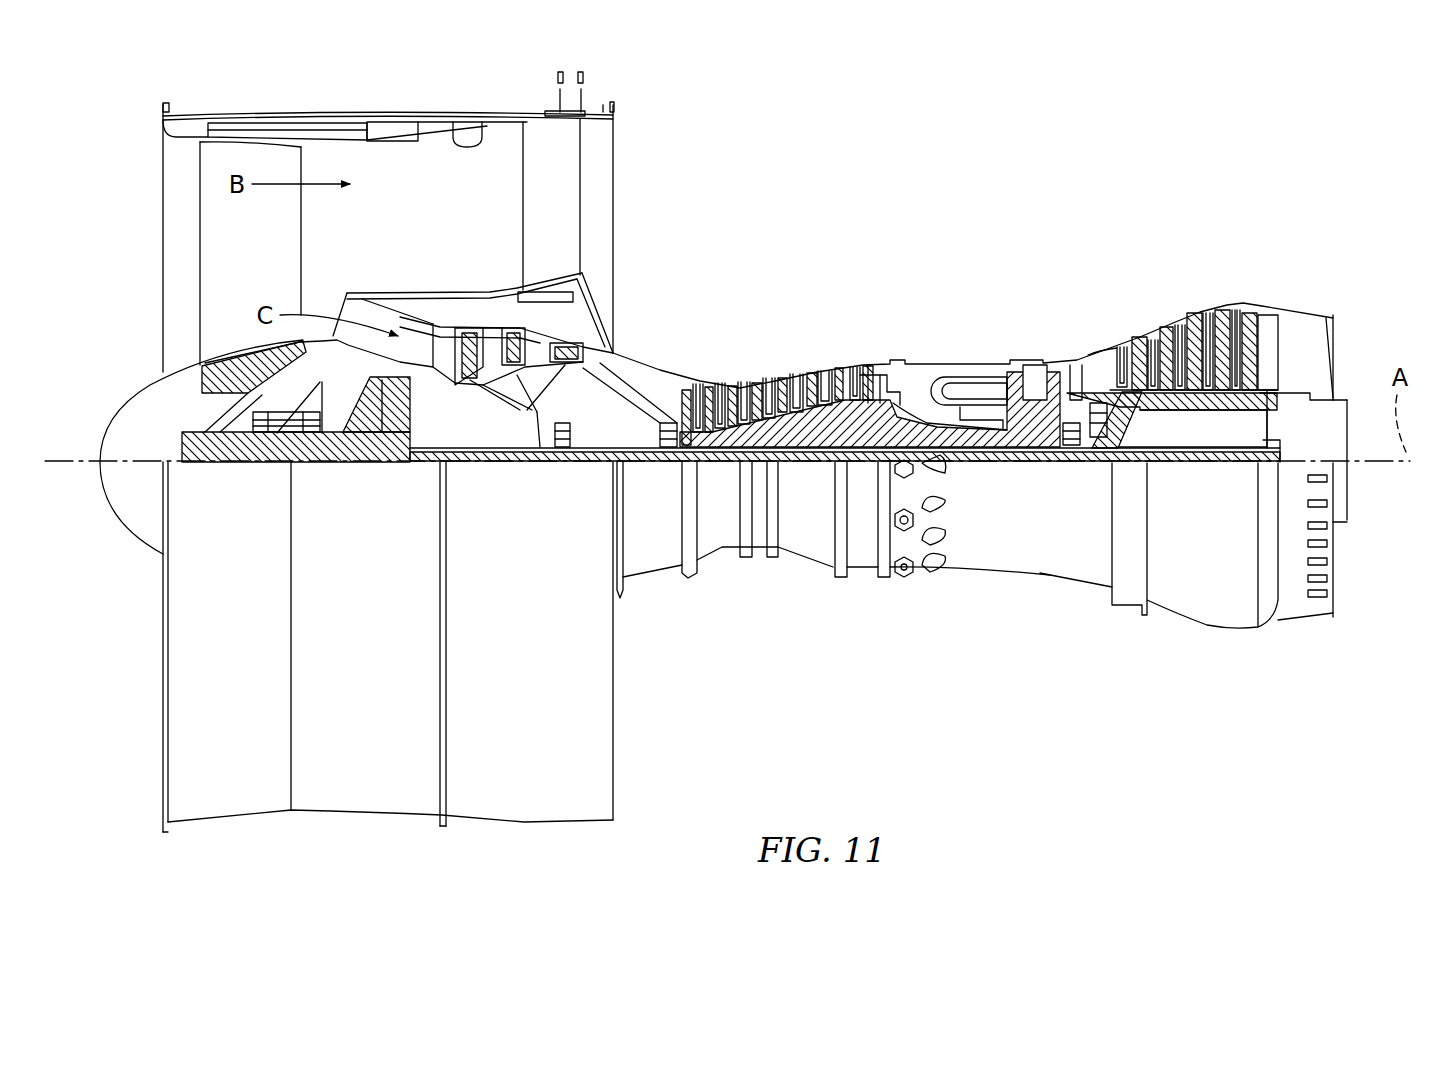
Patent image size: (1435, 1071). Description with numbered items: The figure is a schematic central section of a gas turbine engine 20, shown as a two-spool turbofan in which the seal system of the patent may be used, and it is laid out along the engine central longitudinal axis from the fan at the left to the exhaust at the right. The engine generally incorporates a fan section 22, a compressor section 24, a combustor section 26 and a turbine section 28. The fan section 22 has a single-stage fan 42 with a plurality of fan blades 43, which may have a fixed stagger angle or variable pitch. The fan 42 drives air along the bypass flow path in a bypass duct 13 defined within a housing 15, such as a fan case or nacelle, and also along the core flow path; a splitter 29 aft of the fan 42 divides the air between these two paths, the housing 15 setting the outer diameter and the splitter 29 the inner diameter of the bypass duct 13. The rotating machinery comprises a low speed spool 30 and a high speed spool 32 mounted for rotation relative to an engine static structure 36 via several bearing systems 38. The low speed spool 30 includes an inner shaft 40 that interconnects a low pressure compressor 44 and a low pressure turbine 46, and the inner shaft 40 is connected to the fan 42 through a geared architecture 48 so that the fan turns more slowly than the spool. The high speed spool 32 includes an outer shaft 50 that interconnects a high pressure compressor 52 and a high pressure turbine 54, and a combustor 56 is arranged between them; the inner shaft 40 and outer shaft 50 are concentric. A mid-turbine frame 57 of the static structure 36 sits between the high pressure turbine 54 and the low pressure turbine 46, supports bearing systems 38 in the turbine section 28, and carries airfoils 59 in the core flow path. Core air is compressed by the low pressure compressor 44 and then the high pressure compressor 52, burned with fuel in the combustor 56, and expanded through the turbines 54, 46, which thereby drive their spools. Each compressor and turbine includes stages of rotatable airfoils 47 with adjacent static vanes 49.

The bypass duct 13 is at (485, 125).
The housing 15 is at (404, 121).
The gas turbine engine 20 is at (1008, 207).
The fan section 22 is at (312, 103).
The compressor section 24 is at (666, 360).
The combustor section 26 is at (945, 350).
The turbine section 28 is at (1140, 295).
The splitter 29 is at (360, 293).
The low speed spool 30 is at (818, 464).
The high speed spool 32 is at (867, 425).
The engine static structure 36 is at (863, 574).
The bearing systems 38 is at (566, 446).
The inner shaft 40 is at (630, 462).
The fan 42 is at (256, 251).
The fan blades 43 is at (290, 265).
The low pressure compressor 44 is at (555, 345).
The low pressure turbine 46 is at (1188, 326).
The rotatable airfoils 47 is at (470, 345).
The geared architecture 48 is at (395, 440).
The static vanes 49 is at (490, 345).
The outer shaft 50 is at (973, 442).
The high pressure compressor 52 is at (790, 386).
The high pressure turbine 54 is at (1035, 365).
The combustor 56 is at (962, 385).
The mid-turbine frame 57 is at (1090, 352).
The airfoils 59 is at (1085, 380).